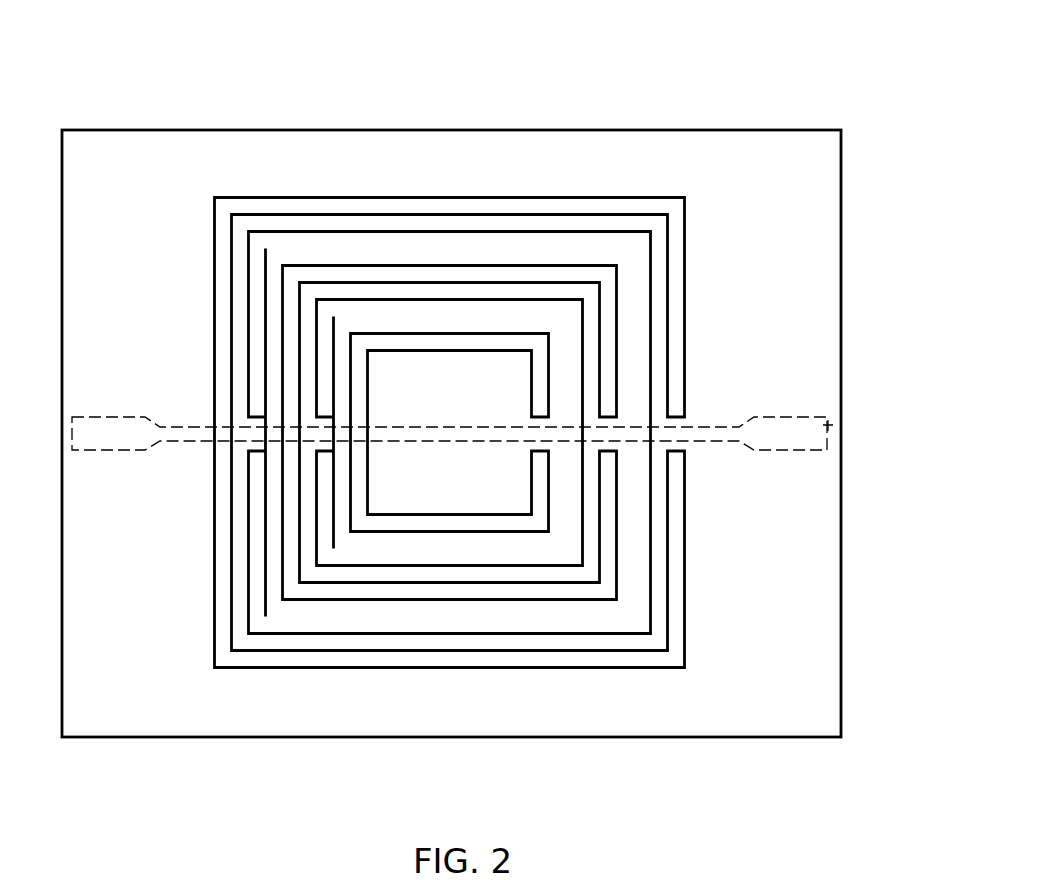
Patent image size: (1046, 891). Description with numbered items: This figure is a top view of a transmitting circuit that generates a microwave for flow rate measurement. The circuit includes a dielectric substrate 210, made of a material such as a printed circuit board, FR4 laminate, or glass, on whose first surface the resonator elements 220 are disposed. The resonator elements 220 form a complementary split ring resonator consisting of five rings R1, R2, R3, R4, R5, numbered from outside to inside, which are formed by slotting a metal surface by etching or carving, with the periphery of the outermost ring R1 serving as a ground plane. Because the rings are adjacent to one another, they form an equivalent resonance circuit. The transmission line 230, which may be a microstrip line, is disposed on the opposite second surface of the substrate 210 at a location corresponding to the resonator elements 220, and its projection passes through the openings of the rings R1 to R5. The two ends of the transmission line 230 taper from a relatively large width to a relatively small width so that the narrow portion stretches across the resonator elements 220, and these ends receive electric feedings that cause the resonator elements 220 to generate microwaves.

The substrate 210 is at (805, 338).
The resonator elements 220 is at (573, 62).
The ring R1 is at (243, 207).
The ring R2 is at (314, 243).
The ring R3 is at (392, 278).
The ring R4 is at (470, 310).
The ring R5 is at (545, 345).
The transmission line 230 is at (833, 426).